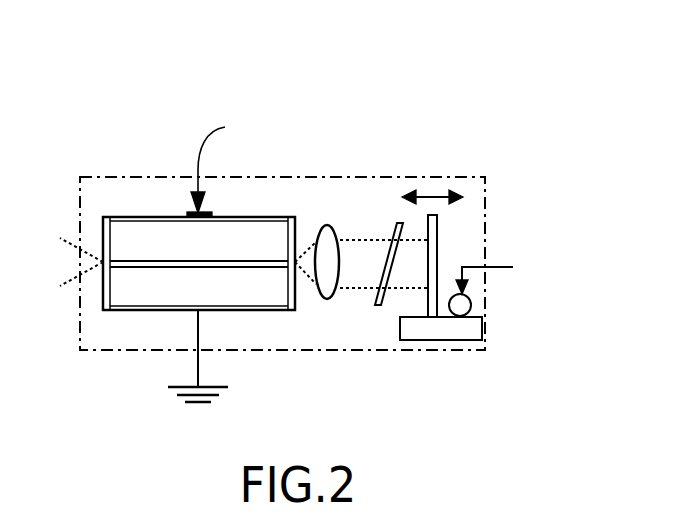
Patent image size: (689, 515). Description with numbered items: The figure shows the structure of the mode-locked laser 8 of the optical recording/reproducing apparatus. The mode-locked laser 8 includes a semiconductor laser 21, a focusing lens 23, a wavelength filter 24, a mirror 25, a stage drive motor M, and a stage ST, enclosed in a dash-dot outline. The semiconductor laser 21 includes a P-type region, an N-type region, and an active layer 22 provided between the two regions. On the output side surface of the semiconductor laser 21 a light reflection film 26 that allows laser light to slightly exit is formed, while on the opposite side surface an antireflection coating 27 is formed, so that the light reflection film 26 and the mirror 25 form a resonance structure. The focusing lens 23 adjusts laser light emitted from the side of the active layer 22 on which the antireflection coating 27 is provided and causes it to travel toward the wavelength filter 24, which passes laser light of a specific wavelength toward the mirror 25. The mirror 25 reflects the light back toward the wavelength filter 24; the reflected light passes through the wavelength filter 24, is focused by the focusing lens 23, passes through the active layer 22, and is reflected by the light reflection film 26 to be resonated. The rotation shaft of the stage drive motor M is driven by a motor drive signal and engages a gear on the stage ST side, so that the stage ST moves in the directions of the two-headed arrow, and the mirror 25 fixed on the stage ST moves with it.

The mode-locked laser 8 is at (262, 86).
The semiconductor laser 21 is at (169, 272).
The active layer 22 is at (133, 264).
The focusing lens 23 is at (328, 300).
The wavelength filter 24 is at (377, 306).
The mirror 25 is at (437, 250).
The light reflection film 26 is at (103, 217).
The antireflection coating 27 is at (293, 217).
The stage drive motor M is at (471, 304).
The stage ST is at (438, 341).